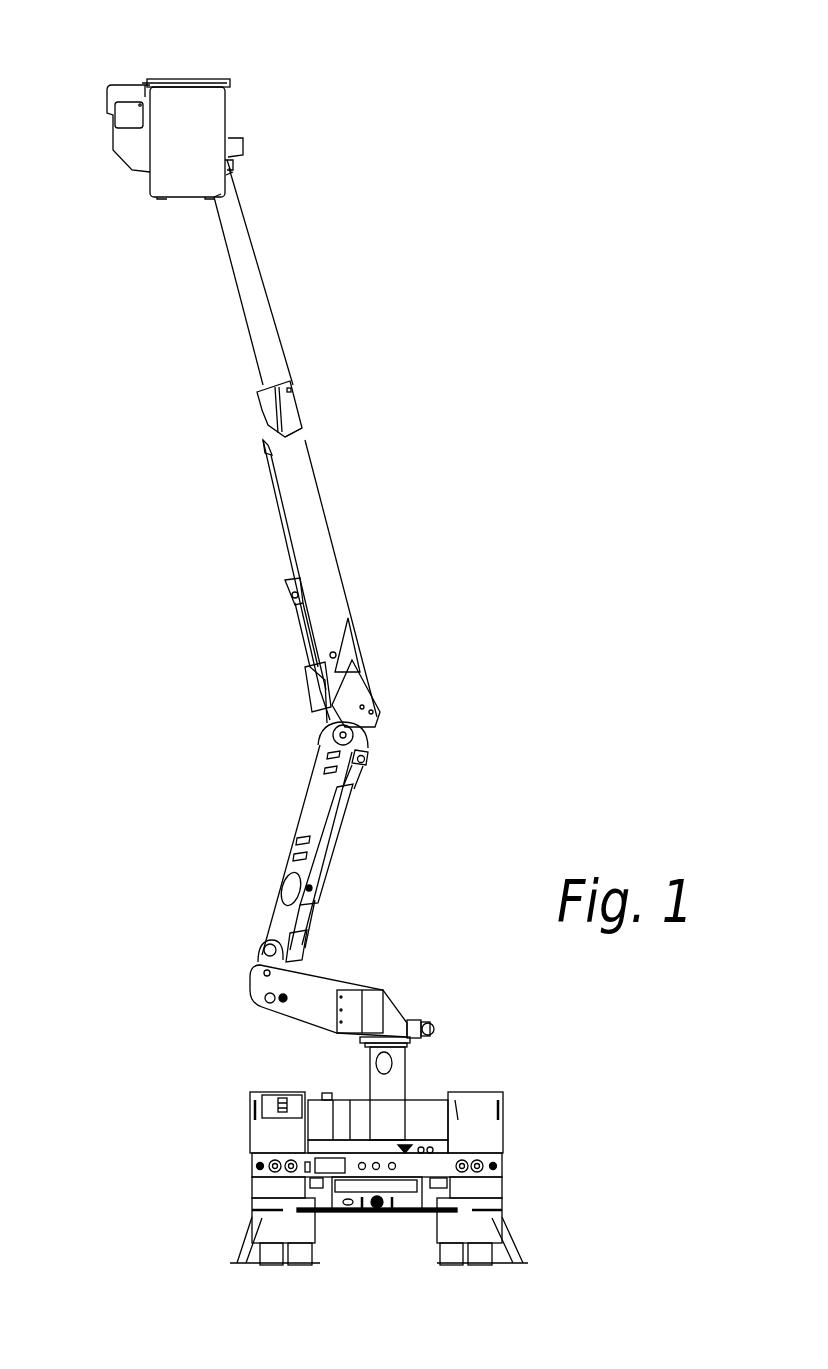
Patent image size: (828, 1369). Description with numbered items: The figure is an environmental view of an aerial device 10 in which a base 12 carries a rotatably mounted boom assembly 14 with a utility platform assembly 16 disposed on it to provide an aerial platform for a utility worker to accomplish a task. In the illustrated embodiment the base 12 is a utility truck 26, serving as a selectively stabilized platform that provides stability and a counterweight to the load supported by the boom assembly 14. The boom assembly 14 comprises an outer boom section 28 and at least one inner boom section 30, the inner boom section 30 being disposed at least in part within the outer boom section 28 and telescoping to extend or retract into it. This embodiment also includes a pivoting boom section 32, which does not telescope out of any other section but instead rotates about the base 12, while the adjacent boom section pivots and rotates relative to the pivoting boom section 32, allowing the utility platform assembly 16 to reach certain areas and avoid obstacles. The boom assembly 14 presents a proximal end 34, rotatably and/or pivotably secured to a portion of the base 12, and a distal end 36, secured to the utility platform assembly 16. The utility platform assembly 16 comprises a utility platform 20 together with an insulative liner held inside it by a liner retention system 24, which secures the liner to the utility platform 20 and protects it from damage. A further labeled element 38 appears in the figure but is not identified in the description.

The aerial device 10 is at (572, 539).
The base 12 is at (188, 1026).
The boom assembly 14 is at (386, 500).
The utility platform assembly 16 is at (231, 62).
The utility platform 20 is at (230, 101).
The liner retention system 24 is at (170, 70).
The utility truck 26 is at (224, 1174).
The outer boom section 28 is at (300, 535).
The inner boom section 30 is at (253, 305).
The pivoting boom section 32 is at (318, 800).
The proximal end 34 is at (418, 862).
The distal end 36 is at (252, 167).
The platform actuator 38 is at (176, 165).